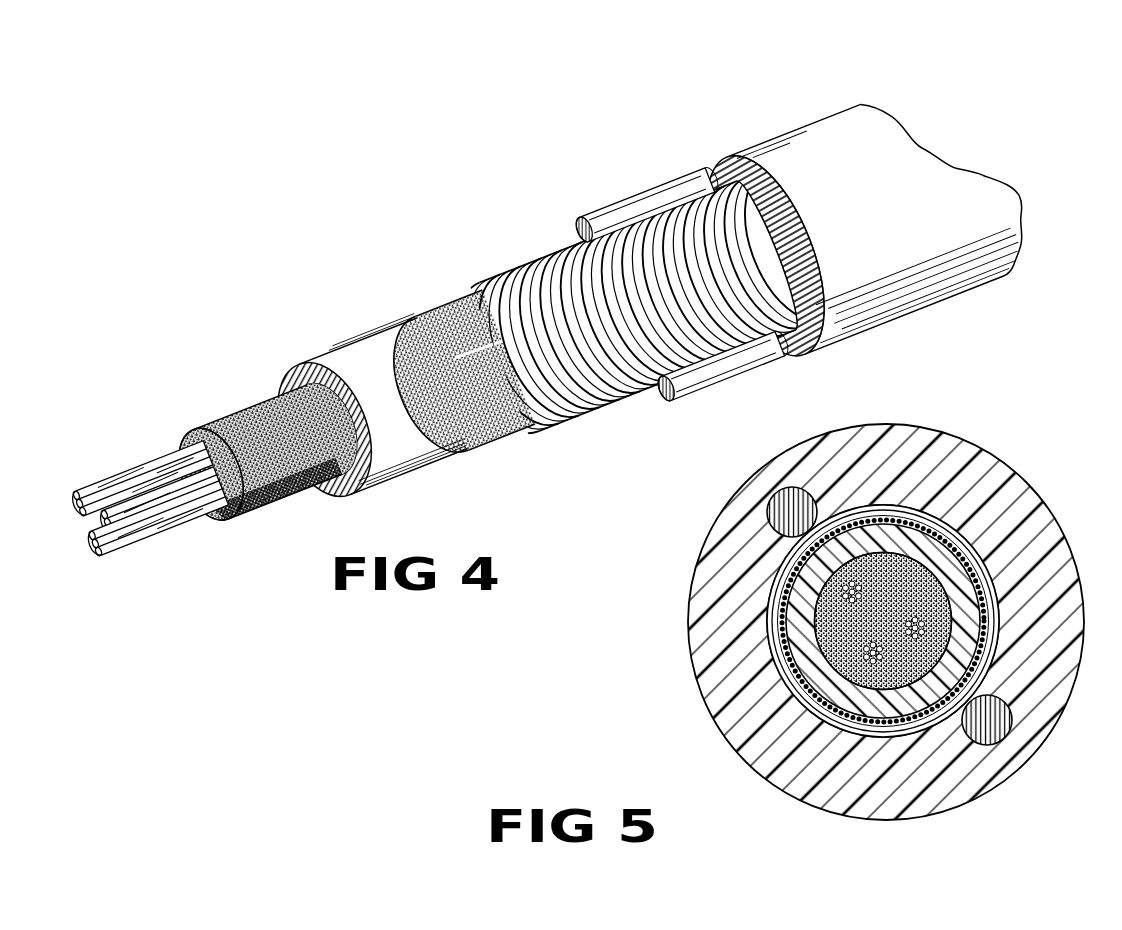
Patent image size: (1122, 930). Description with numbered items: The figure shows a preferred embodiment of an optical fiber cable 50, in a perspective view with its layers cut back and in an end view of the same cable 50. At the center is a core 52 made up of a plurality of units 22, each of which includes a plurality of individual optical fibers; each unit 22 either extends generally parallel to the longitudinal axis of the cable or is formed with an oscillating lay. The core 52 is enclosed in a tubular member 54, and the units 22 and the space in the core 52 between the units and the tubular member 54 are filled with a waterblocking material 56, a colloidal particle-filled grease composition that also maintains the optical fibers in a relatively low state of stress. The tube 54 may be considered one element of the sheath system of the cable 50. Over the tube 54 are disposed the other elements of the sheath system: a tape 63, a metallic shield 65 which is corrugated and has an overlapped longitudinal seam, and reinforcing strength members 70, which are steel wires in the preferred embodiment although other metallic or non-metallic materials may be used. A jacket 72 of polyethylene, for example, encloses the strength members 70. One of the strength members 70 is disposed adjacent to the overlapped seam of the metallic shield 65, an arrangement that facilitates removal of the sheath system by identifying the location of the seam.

In FIG. 4, the unit 22 is at (118, 556).
In FIG. 5, the unit 22 is at (833, 602).
In FIG. 4, the cable 50 is at (534, 349).
In FIG. 5, the cable 50 is at (903, 605).
In FIG. 4, the core 52 is at (153, 430).
In FIG. 4, the tubular member 54 is at (382, 478).
In FIG. 5, the tubular member 54 is at (968, 580).
In FIG. 4, the waterblocking material 56 is at (221, 520).
In FIG. 5, the waterblocking material 56 is at (904, 588).
In FIG. 4, the tape 63 is at (425, 322).
In FIG. 5, the tape 63 is at (858, 518).
In FIG. 4, the metallic shield 65 is at (545, 262).
In FIG. 5, the metallic shield 65 is at (790, 555).
In FIG. 4, the strength members 70 is at (576, 219).
In FIG. 5, the strength members 70 is at (809, 503).
In FIG. 4, the jacket 72 is at (796, 356).
In FIG. 5, the jacket 72 is at (1068, 578).